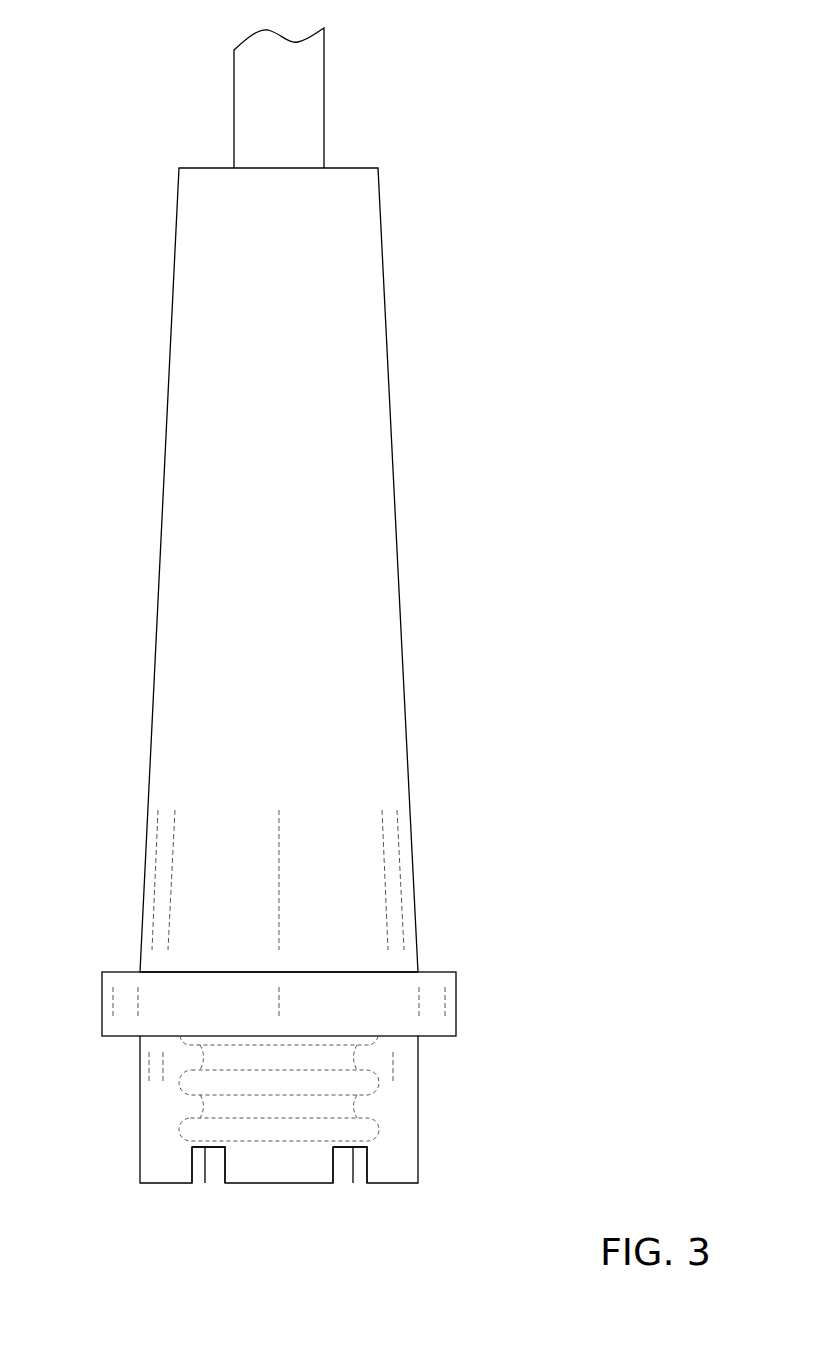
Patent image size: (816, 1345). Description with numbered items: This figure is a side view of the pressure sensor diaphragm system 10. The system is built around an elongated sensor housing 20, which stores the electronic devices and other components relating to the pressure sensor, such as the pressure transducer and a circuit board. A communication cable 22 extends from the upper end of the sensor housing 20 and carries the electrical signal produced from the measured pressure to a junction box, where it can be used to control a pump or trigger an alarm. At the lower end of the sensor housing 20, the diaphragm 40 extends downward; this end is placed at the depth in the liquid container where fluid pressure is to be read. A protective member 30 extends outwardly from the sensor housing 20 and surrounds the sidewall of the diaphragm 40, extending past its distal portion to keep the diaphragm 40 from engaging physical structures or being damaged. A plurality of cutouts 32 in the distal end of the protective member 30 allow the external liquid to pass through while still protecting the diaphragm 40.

The pressure sensor diaphragm system 10 is at (533, 198).
The sensor housing 20 is at (399, 600).
The communication cable 22 is at (324, 97).
The protective member 30 is at (405, 1163).
The cutouts 32 is at (225, 1163).
The diaphragm 40 is at (153, 1117).